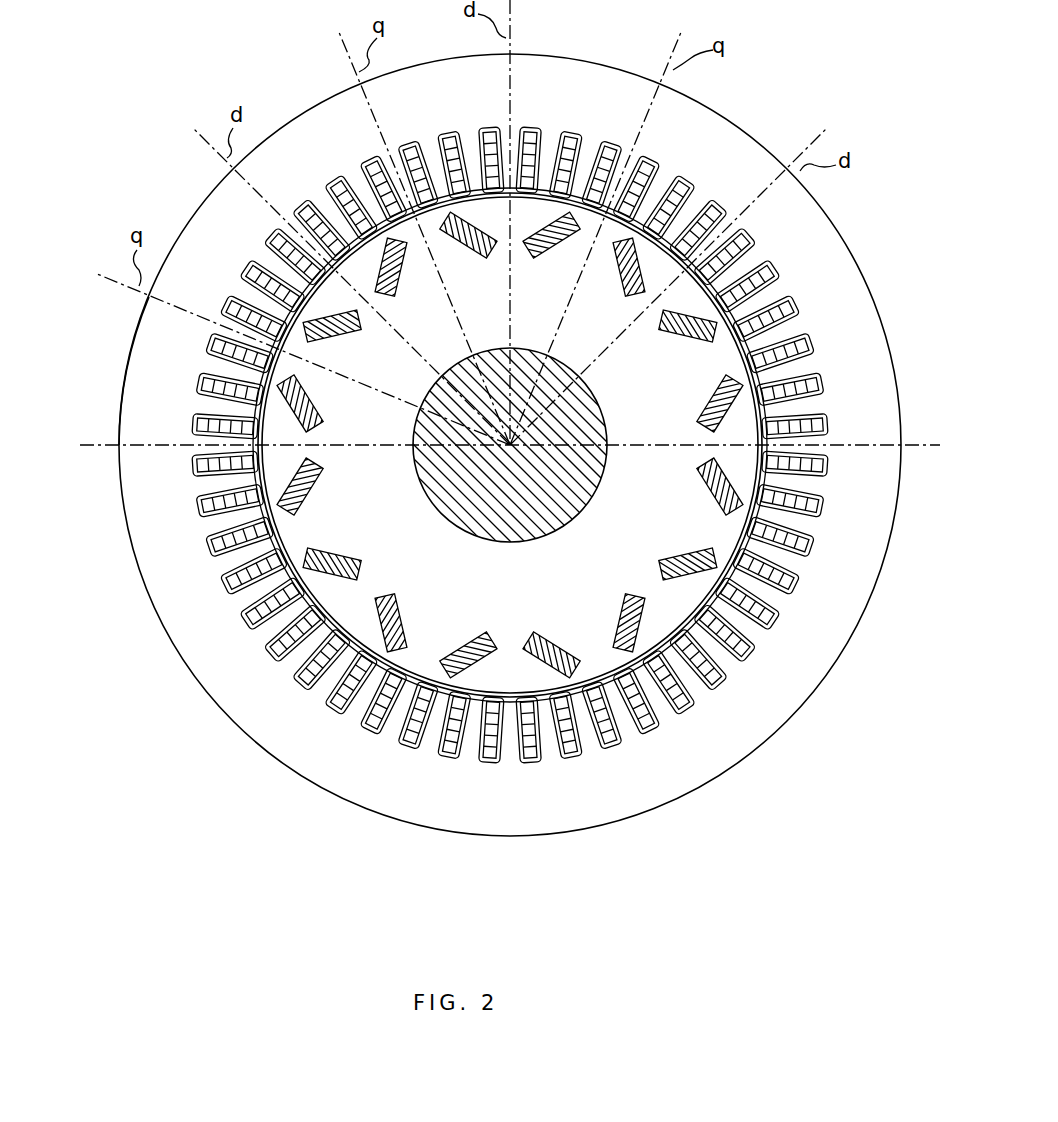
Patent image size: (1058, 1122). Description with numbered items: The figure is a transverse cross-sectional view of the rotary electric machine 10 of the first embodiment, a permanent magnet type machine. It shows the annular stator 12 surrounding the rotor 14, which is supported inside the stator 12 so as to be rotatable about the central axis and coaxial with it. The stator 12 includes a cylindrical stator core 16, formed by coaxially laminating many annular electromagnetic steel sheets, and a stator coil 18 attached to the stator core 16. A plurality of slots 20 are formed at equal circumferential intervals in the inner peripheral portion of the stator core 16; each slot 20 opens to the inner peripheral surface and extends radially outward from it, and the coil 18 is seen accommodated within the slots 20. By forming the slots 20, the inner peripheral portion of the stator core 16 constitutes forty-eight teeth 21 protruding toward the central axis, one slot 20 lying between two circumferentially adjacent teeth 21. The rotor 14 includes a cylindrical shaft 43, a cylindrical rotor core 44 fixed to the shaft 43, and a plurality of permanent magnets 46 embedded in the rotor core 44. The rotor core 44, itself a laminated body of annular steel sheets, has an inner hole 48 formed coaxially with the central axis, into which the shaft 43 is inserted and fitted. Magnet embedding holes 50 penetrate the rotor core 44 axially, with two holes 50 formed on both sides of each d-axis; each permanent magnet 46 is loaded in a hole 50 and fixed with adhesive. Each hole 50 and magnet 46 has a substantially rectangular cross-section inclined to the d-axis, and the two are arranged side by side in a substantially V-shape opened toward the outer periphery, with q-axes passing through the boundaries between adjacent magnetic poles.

The rotary electric machine 10 is at (148, 700).
The stator 12 is at (304, 785).
The rotor 14 is at (310, 527).
The stator core 16 is at (142, 340).
The stator coil 18 is at (370, 160).
The slot 20 is at (488, 123).
The tooth 21 is at (270, 281).
The shaft 43 is at (515, 542).
The rotor core 44 is at (330, 590).
The permanent magnet 46 is at (470, 234).
The inner hole 48 is at (607, 446).
The magnet embedding hole 50 is at (402, 288).